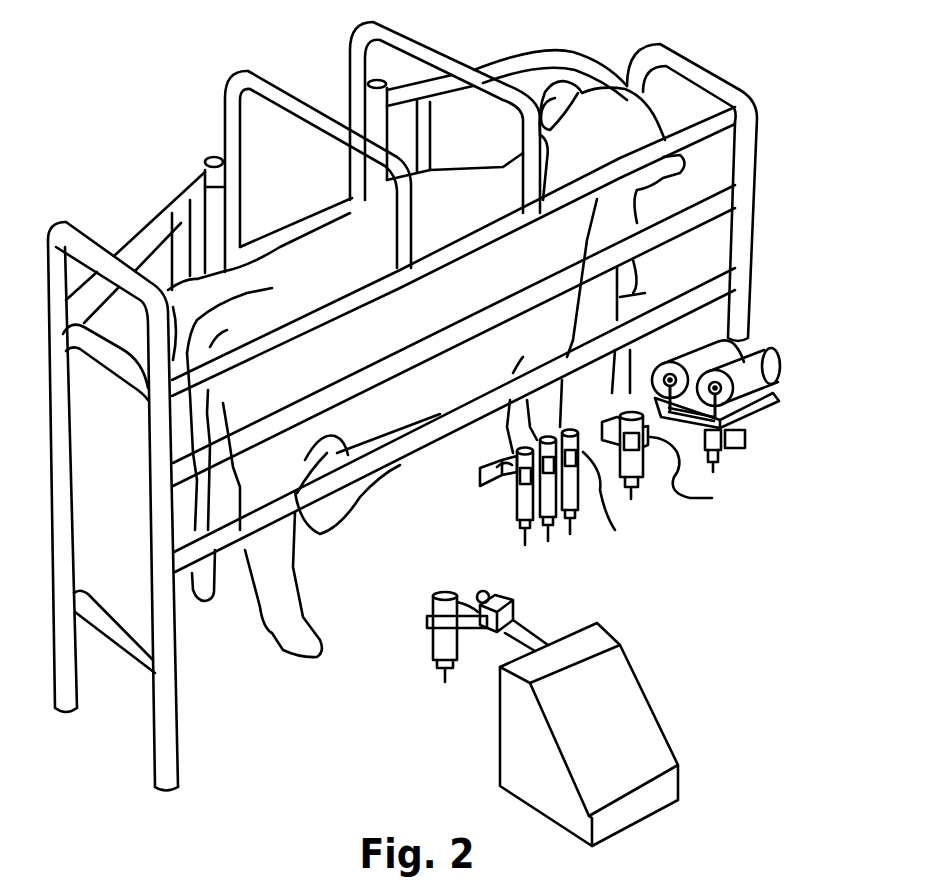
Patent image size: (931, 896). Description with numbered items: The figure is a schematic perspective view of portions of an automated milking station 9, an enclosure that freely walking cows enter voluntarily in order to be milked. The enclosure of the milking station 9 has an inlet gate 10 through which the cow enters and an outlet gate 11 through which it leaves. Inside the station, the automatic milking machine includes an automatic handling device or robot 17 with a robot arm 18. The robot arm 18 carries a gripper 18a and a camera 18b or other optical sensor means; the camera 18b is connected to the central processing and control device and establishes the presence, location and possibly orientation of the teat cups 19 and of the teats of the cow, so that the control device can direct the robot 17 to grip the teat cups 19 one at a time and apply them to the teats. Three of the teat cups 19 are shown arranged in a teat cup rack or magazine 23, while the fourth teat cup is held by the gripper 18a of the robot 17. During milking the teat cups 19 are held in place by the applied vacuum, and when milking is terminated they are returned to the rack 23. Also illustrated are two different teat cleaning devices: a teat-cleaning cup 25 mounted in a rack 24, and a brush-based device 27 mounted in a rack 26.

The milking station 9 is at (376, 530).
The inlet gate 10 is at (148, 222).
The outlet gate 11 is at (517, 64).
The robot 17 is at (647, 713).
The robot arm 18 is at (502, 643).
The gripper 18a is at (427, 617).
The camera 18b is at (513, 607).
The teat cups 19 is at (517, 510).
The teat cup rack 23 is at (611, 506).
The rack 24 is at (697, 475).
The teat-cleaning cup 25 is at (633, 470).
The rack 26 is at (781, 401).
The brush-based device 27 is at (768, 350).